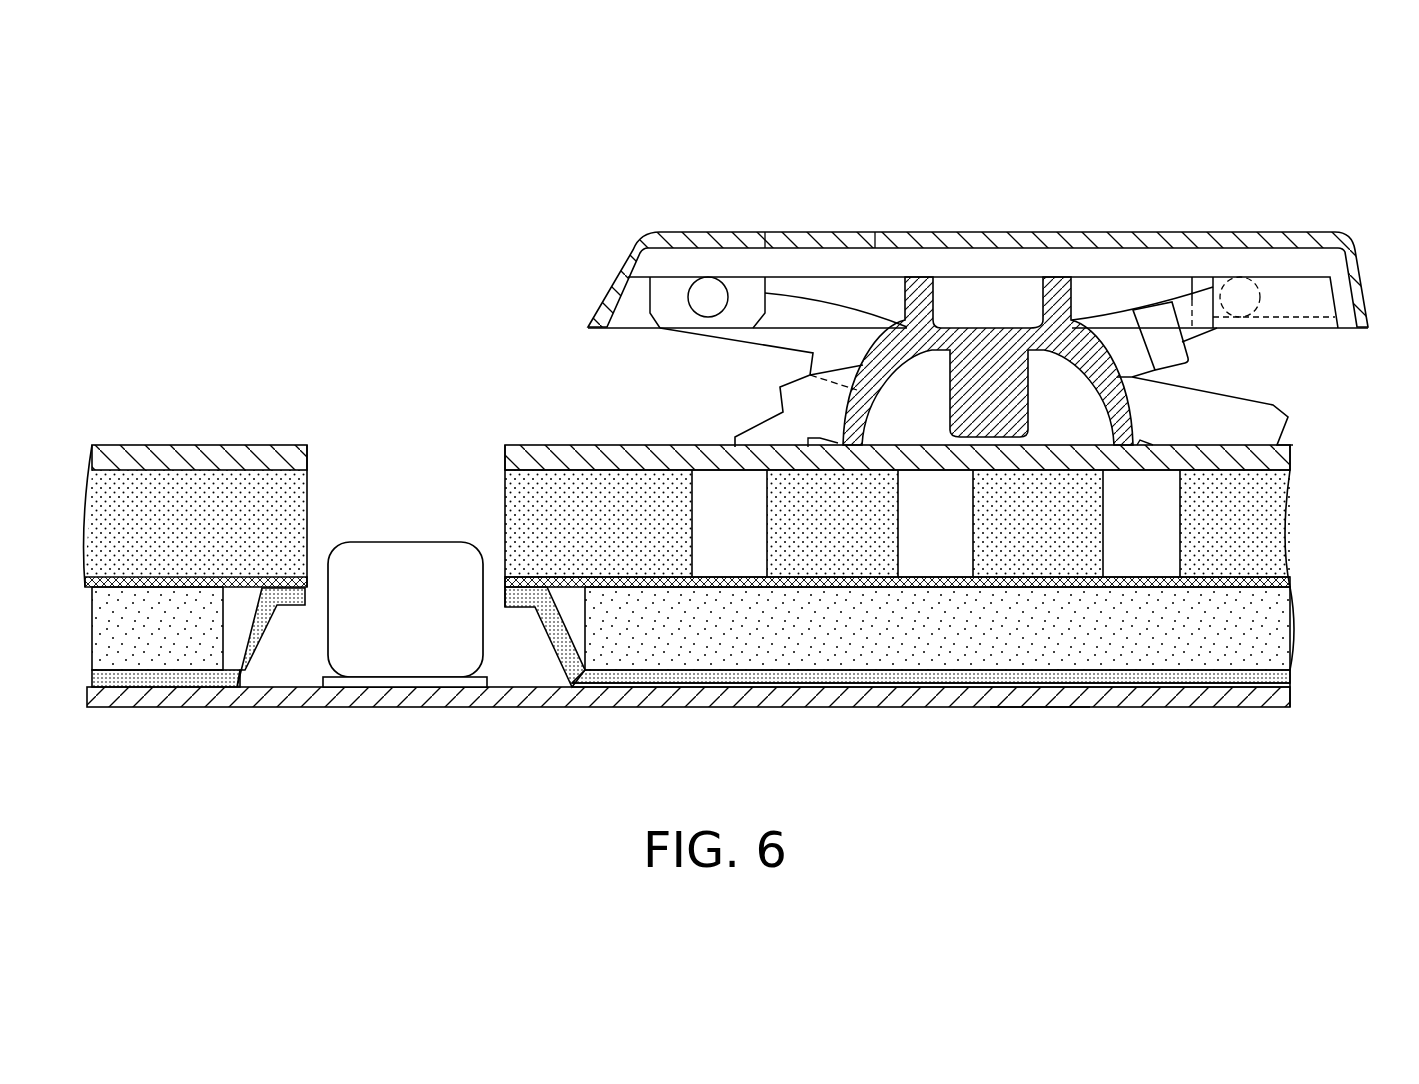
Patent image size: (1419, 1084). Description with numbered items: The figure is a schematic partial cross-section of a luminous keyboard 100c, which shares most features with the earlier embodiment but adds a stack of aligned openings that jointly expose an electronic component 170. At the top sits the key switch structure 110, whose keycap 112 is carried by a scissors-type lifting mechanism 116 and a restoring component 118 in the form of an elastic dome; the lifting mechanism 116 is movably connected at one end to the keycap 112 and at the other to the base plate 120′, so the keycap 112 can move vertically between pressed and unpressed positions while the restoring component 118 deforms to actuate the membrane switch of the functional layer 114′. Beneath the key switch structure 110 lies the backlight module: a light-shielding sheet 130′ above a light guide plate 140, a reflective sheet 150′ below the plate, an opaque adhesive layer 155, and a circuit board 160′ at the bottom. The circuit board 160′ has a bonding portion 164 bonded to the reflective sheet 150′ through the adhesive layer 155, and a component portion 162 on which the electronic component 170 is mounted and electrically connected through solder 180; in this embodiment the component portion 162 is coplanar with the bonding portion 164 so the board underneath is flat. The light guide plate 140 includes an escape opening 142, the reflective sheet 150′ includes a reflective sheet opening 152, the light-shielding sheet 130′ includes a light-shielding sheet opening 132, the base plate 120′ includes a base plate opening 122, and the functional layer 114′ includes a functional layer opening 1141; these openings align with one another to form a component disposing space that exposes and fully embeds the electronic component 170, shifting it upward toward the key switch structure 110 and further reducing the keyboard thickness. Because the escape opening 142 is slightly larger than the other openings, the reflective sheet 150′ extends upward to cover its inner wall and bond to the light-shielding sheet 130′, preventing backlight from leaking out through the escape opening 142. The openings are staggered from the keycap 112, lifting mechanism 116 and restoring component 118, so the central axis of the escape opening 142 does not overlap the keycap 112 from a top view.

The luminous keyboard 100c is at (751, 460).
The key switch structure 110 is at (1360, 206).
The keycap 112 is at (1010, 268).
The functional layer 114′ is at (203, 446).
The functional layer opening 1141 is at (307, 457).
The lifting mechanism 116 is at (786, 337).
The restoring component 118 is at (914, 284).
The base plate 120′ is at (1277, 542).
The base plate opening 122 is at (307, 513).
The light-shielding sheet 130′ is at (1283, 585).
The light-shielding sheet opening 132 is at (307, 582).
The light guide plate 140 is at (1283, 629).
The escape opening 142 is at (223, 610).
The reflective sheet 150′ is at (1285, 680).
The reflective sheet opening 152 is at (307, 598).
The adhesive layer 155 is at (1287, 687).
The circuit board 160′ is at (1285, 700).
The component portion 162 is at (393, 698).
The bonding portion 164 is at (1043, 706).
The electronic component 170 is at (468, 638).
The solder 180 is at (450, 685).